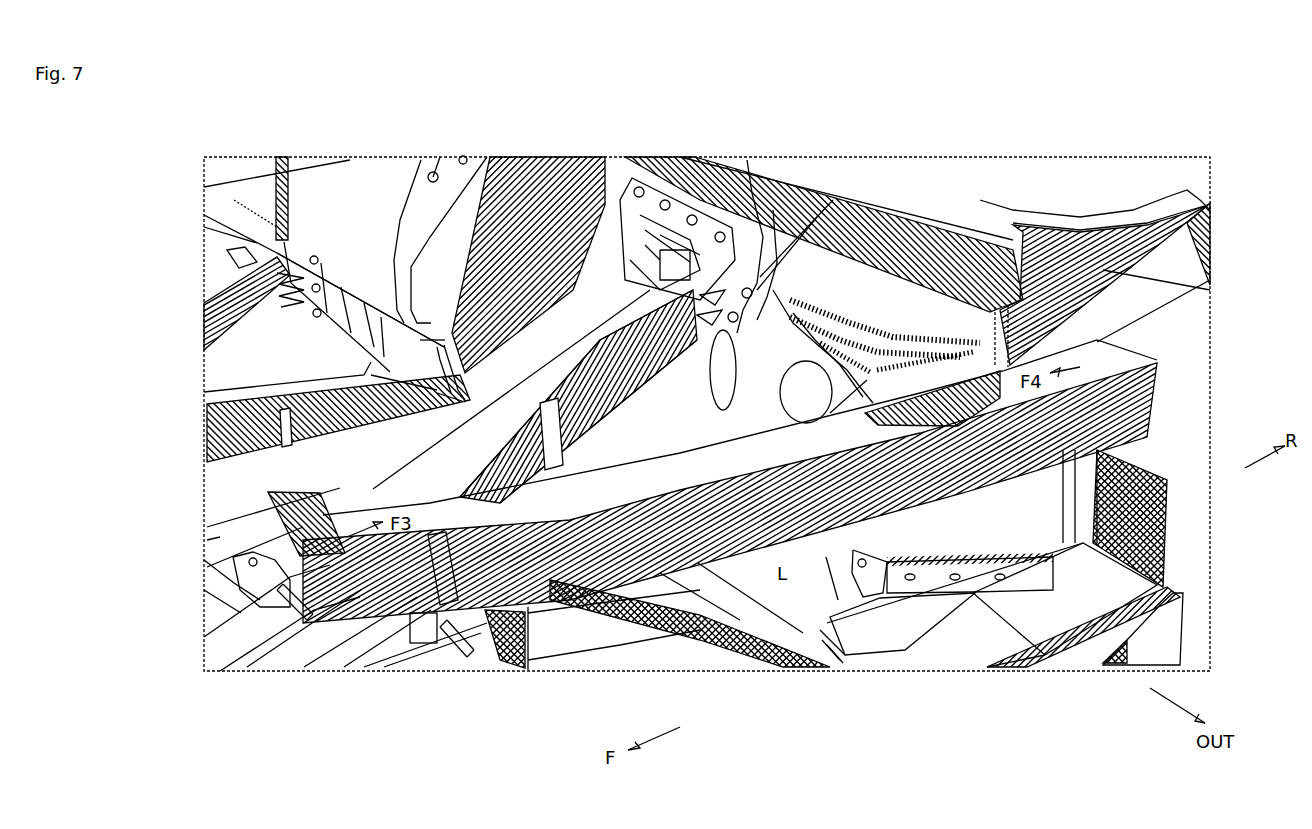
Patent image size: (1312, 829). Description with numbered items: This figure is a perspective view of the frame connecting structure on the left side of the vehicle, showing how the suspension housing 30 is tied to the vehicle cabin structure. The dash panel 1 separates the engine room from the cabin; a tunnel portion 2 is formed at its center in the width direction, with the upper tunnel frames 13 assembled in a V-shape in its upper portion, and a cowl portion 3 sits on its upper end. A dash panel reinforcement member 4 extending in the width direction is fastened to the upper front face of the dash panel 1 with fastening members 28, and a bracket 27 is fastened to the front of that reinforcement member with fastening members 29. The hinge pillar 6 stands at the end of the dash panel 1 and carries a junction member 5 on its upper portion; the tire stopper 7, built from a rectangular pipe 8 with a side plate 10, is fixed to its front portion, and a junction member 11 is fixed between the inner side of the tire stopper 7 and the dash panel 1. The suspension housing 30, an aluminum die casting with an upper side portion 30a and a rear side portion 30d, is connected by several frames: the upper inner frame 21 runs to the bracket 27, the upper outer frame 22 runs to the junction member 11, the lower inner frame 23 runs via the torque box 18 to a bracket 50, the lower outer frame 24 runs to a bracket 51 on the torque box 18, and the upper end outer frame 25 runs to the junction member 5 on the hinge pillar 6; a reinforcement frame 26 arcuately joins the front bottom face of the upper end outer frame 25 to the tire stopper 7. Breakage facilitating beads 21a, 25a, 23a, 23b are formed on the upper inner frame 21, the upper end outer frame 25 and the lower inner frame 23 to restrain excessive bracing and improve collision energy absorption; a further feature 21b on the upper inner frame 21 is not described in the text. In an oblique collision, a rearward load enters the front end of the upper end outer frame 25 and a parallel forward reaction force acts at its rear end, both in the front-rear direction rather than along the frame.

The dash panel 1 is at (345, 239).
The tunnel portion 2 is at (656, 414).
The cowl portion 3 is at (656, 414).
The dash panel reinforcement member 4 is at (845, 268).
The junction member 5 is at (1153, 306).
The hinge pillar 6 is at (656, 414).
The tire stopper 7 is at (656, 414).
The rectangular pipe 8 is at (656, 414).
The side plate 10 is at (656, 414).
The junction member 11 is at (897, 628).
The upper tunnel frames 13 is at (656, 414).
The torque box 18 is at (320, 367).
The upper inner frame 21 is at (535, 396).
The breakage facilitating bead 21a is at (656, 414).
The brace upper end 21b is at (656, 414).
The upper outer frame 22 is at (614, 656).
The lower inner frame 23 is at (656, 414).
The breakage facilitating bead 23a is at (428, 372).
The breakage facilitating bead 23b is at (280, 446).
The lower outer frame 24 is at (656, 414).
The upper end outer frame 25 is at (656, 414).
The breakage facilitating bead 25a is at (656, 414).
The reinforcement frame 26 is at (656, 414).
The bracket 27 is at (677, 206).
The fastening members 28 is at (740, 325).
The fastening members 29 is at (662, 199).
The suspension housing 30 is at (656, 414).
The upper side portion 30a is at (189, 544).
The rear side portion 30d is at (656, 414).
The bracket 50 is at (435, 322).
The bracket 51 is at (335, 301).